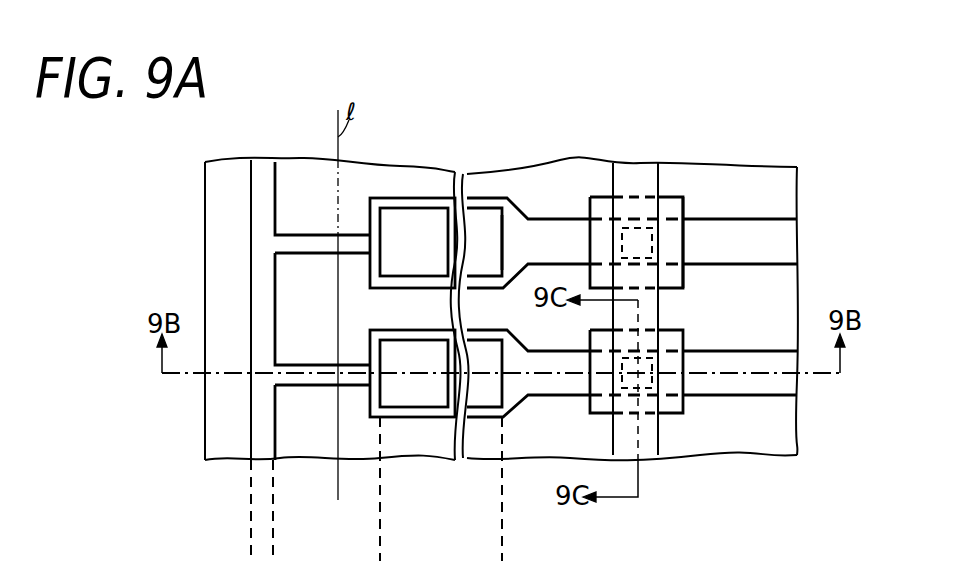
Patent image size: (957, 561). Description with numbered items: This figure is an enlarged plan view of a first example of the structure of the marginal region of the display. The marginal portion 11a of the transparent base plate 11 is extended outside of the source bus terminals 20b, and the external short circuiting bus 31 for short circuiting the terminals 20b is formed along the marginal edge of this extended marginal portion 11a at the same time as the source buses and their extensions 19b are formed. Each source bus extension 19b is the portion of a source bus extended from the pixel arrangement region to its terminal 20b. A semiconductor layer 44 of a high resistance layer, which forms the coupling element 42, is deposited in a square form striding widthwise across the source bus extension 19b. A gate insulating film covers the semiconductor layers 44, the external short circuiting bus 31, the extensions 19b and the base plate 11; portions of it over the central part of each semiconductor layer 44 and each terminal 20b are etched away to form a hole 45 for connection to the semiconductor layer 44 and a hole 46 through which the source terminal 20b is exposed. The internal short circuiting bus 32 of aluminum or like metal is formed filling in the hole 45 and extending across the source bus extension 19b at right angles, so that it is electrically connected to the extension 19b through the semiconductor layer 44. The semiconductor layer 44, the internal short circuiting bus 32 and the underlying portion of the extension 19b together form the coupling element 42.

The transparent base plate 11 is at (218, 177).
The marginal portion 11a is at (298, 447).
The external short circuiting bus 31 is at (258, 163).
The internal short circuiting bus 32 is at (648, 175).
The source bus terminal 20b is at (413, 197).
The hole 46 is at (498, 242).
The coupling element 42 is at (673, 186).
The semiconductor layer 44 is at (683, 207).
The hole 45 is at (650, 240).
The source bus extension 19b is at (783, 232).